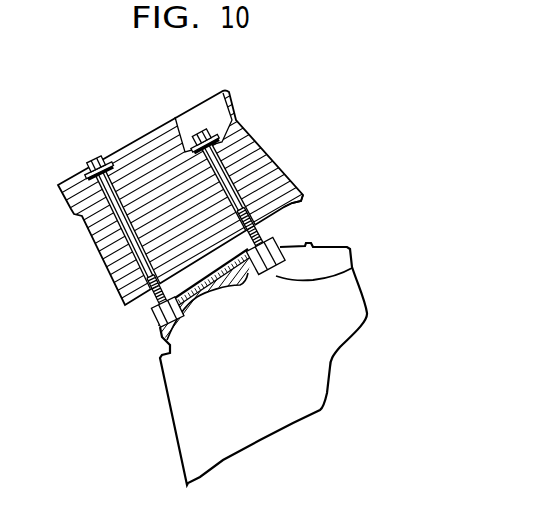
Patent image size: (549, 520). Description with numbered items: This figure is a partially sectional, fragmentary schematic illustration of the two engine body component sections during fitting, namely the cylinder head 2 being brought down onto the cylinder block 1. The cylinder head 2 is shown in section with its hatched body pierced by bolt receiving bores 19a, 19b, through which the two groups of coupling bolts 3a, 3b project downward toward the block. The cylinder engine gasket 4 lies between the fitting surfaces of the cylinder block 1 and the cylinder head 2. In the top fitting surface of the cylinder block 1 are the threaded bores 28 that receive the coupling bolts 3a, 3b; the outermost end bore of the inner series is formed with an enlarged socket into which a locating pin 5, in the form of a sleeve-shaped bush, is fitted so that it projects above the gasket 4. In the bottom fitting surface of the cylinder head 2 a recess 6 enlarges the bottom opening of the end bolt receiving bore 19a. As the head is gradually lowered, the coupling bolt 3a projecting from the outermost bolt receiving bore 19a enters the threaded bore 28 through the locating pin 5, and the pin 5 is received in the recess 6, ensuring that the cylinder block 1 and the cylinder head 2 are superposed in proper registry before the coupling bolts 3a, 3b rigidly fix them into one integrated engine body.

The cylinder block 1 is at (346, 243).
The cylinder head 2 is at (269, 138).
The coupling bolts 3a is at (197, 132).
The coupling bolts 3b is at (95, 157).
The cylinder engine gasket 4 is at (202, 295).
The locating pin 5 is at (267, 233).
The recess 6 is at (306, 192).
The bolt receiving bores 19a is at (234, 192).
The bolt receiving bores 19b is at (130, 247).
The threaded bores 28 is at (340, 271).